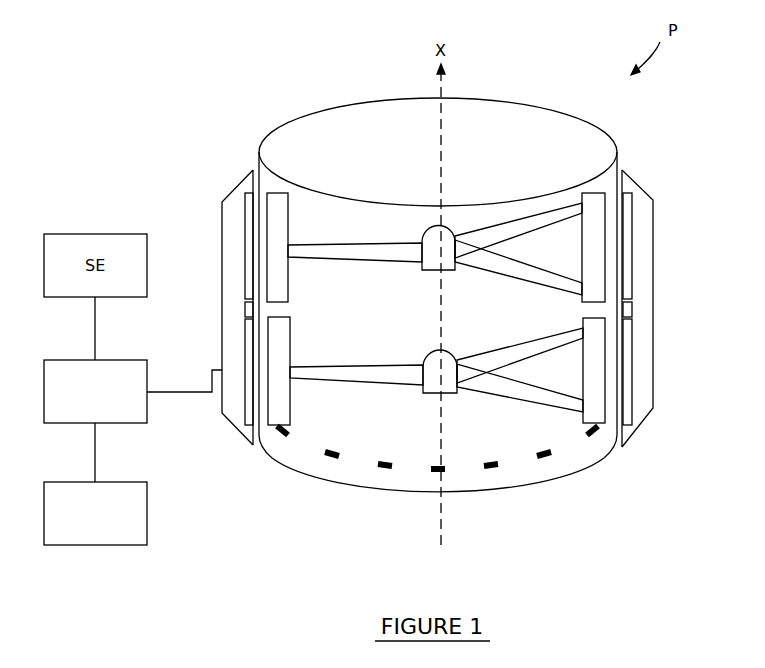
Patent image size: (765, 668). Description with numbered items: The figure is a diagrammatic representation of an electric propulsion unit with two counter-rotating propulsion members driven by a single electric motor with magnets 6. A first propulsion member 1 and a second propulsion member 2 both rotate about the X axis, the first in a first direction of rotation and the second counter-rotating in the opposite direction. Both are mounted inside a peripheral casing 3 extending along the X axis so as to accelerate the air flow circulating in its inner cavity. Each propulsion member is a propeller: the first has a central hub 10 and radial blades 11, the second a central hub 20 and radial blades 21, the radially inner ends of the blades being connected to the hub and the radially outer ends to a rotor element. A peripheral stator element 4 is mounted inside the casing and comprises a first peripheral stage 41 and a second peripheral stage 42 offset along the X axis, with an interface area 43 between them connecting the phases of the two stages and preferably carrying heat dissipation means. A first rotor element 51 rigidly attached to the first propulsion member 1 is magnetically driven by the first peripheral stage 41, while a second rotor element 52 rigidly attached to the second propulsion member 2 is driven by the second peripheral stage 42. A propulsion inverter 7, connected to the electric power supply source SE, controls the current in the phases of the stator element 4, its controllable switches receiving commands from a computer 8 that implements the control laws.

The first propulsion member 1 is at (436, 364).
The second propulsion member 2 is at (436, 244).
The peripheral casing 3 is at (617, 141).
The peripheral stator element 4 is at (238, 267).
The magnets 6 is at (599, 437).
The propulsion inverter 7 is at (133, 391).
The computer 8 is at (95, 513).
The central hub 10 is at (438, 390).
The radial blades 11 is at (370, 379).
The central hub 20 is at (436, 266).
The radial blades 21 is at (368, 256).
The first peripheral stage 41 is at (632, 378).
The second peripheral stage 42 is at (632, 262).
The interface area 43 is at (632, 310).
The first rotor element 51 is at (293, 358).
The second rotor element 52 is at (292, 236).